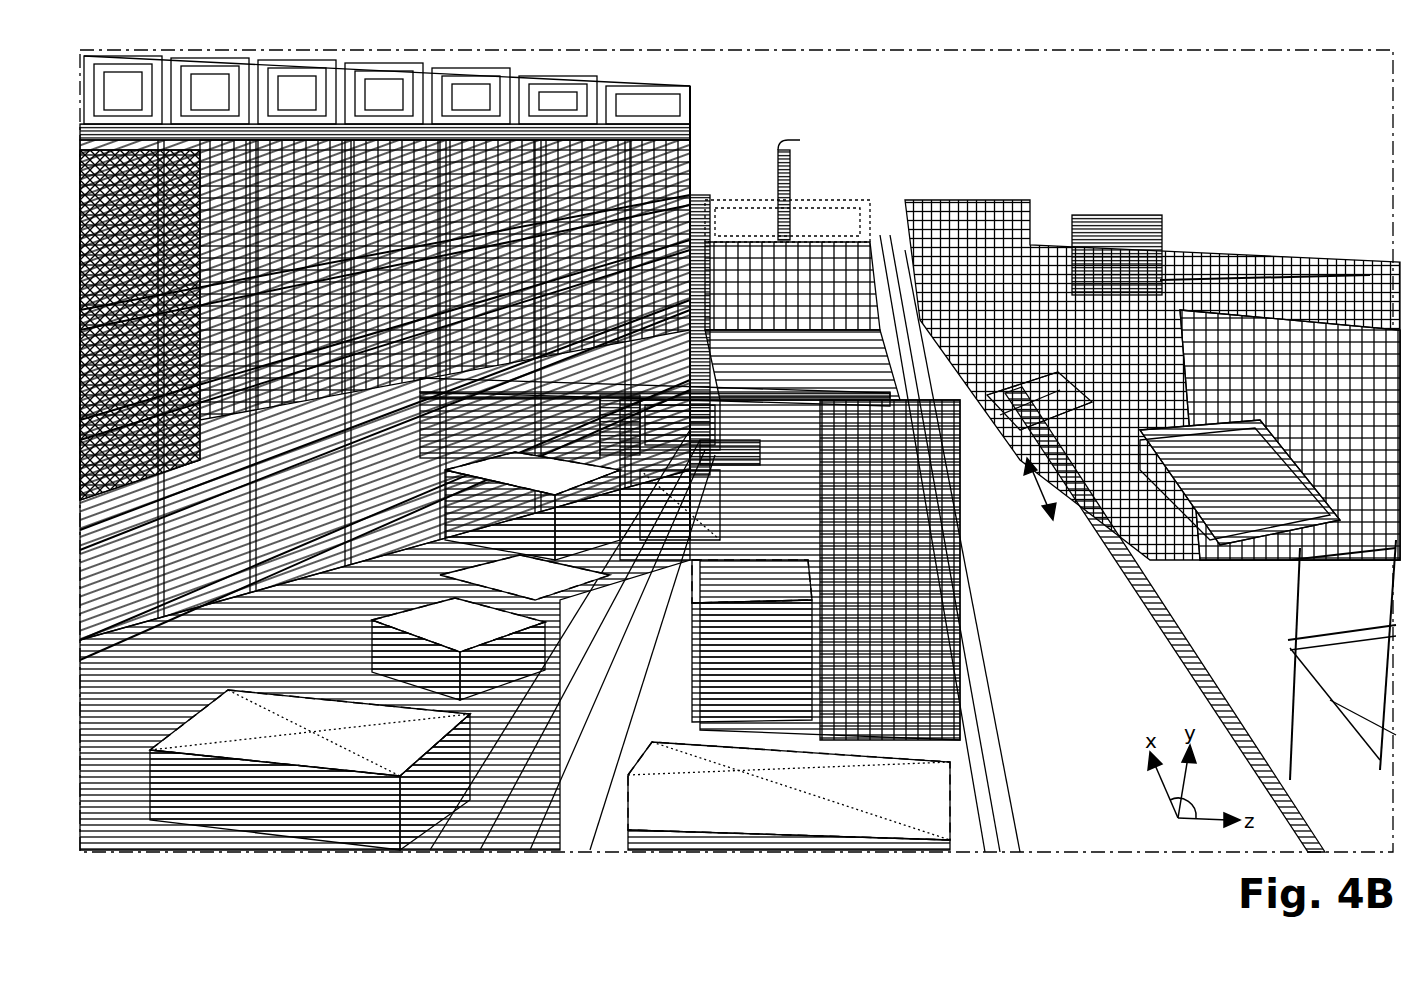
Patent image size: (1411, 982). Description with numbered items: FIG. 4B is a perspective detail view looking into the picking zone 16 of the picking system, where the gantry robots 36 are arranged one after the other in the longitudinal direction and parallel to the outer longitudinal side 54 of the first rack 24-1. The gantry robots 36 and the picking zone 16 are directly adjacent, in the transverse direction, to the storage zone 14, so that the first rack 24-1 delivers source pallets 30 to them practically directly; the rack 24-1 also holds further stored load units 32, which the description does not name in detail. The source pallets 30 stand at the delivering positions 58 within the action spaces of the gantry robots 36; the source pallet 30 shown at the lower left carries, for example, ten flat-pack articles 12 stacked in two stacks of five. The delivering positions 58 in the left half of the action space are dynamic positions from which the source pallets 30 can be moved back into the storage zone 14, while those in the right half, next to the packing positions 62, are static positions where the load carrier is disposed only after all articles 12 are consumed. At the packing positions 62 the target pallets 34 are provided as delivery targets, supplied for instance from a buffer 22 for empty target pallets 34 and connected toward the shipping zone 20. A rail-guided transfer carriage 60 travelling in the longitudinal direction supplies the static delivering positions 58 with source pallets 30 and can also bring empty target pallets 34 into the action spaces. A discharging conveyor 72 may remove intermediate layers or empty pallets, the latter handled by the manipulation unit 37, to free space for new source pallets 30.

The articles 12 is at (655, 475).
The storage zone 14 is at (409, 331).
The picking zone 16 is at (872, 182).
The shipping zone 20 is at (1139, 460).
The buffer 22 is at (1118, 210).
The first rack 24-1 is at (518, 70).
The source pallets 30 is at (370, 845).
The storage containers 32 is at (98, 218).
The target pallets 34 is at (1268, 566).
The gantry robots 36 is at (700, 190).
The manipulation unit 37 is at (690, 455).
The outer longitudinal side 54 is at (700, 120).
The delivering positions 58 is at (550, 651).
The transfer carriage 60 is at (1075, 445).
The packing positions 62 is at (718, 728).
The discharging conveyor 72 is at (508, 848).